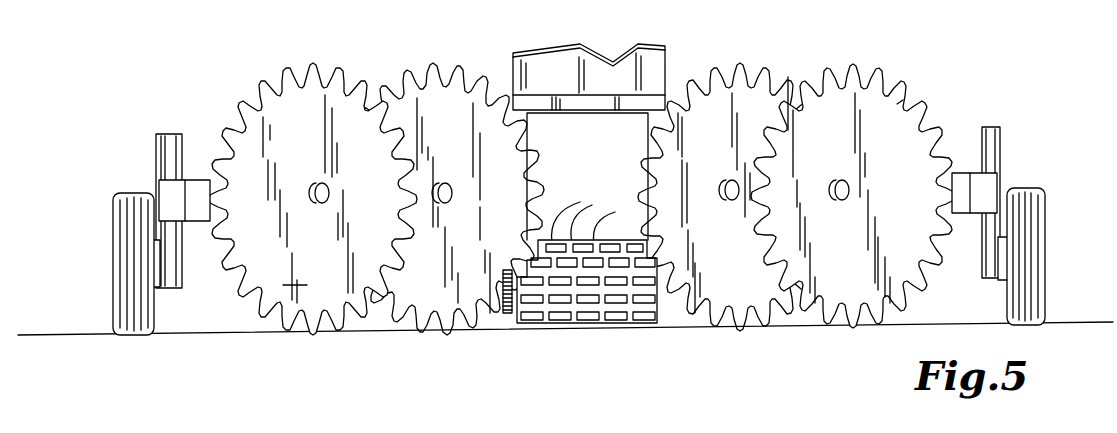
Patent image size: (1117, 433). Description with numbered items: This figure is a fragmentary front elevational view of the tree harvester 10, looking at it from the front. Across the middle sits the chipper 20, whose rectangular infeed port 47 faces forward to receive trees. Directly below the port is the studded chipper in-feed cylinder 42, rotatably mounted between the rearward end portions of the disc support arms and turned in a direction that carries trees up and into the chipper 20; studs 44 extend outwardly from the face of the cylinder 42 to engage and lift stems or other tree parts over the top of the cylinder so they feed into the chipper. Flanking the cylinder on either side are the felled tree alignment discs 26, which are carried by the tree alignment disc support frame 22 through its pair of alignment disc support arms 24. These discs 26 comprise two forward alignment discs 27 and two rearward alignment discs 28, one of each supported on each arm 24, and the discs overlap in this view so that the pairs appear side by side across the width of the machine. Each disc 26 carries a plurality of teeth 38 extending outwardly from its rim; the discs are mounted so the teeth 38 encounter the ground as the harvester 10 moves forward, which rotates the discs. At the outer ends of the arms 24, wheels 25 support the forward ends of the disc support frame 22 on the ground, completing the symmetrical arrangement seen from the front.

The tree harvester 10 is at (1010, 147).
The chipper 20 is at (513, 60).
The tree alignment disc support frame 22 is at (157, 192).
The alignment disc support arms 24 is at (203, 187).
The wheels 25 is at (1023, 212).
The felled tree alignment discs 26 is at (310, 68).
The forward alignment discs 27 is at (267, 293).
The rearward alignment discs 28 is at (507, 158).
The teeth 38 is at (903, 100).
The studded chipper in-feed cylinder 42 is at (530, 318).
The studs 44 is at (587, 218).
The rectangular infeed port 47 is at (623, 120).